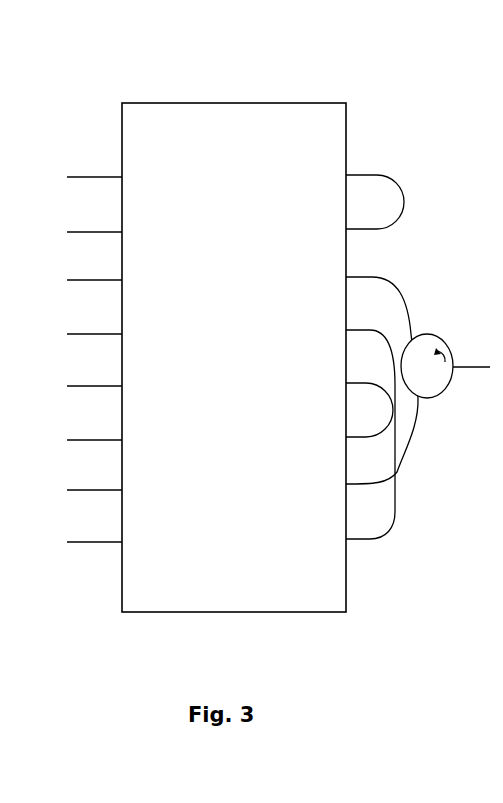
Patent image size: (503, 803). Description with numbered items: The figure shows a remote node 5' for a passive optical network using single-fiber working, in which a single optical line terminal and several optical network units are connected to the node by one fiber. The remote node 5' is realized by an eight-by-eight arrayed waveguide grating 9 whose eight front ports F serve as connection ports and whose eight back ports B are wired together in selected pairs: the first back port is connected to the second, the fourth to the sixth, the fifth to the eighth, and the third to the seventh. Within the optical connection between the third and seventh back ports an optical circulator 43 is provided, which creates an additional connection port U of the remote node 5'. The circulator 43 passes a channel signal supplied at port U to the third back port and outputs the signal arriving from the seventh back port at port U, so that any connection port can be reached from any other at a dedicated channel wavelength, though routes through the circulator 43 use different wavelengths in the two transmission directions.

The remote node 5' is at (278, 322).
The 8×8 AWG 9 is at (280, 113).
The optical circulator 43 is at (424, 343).